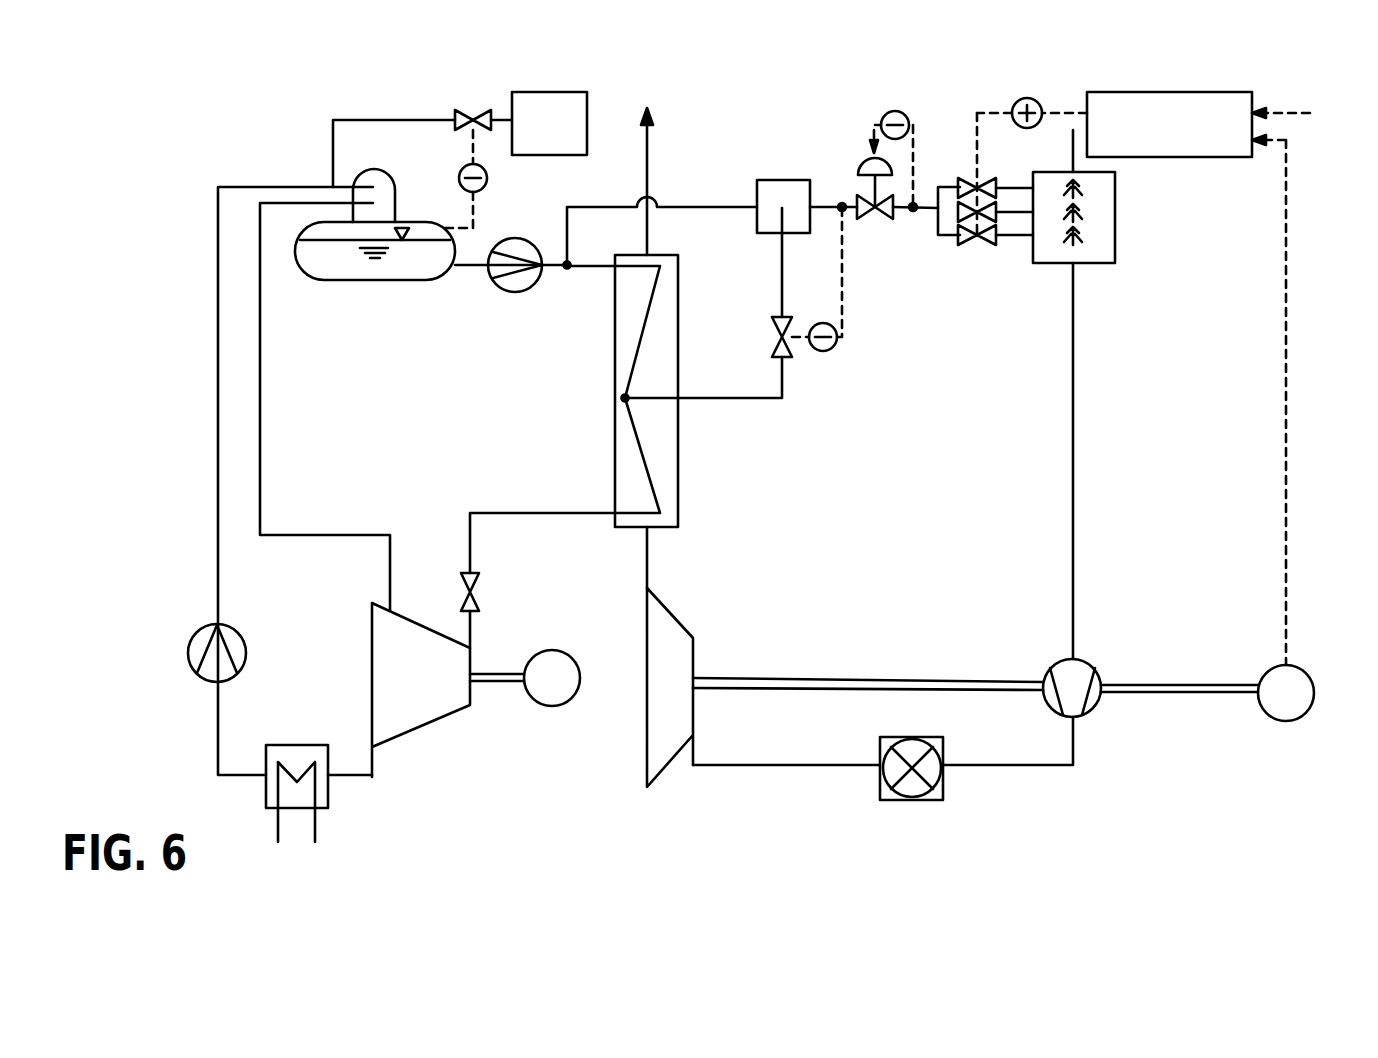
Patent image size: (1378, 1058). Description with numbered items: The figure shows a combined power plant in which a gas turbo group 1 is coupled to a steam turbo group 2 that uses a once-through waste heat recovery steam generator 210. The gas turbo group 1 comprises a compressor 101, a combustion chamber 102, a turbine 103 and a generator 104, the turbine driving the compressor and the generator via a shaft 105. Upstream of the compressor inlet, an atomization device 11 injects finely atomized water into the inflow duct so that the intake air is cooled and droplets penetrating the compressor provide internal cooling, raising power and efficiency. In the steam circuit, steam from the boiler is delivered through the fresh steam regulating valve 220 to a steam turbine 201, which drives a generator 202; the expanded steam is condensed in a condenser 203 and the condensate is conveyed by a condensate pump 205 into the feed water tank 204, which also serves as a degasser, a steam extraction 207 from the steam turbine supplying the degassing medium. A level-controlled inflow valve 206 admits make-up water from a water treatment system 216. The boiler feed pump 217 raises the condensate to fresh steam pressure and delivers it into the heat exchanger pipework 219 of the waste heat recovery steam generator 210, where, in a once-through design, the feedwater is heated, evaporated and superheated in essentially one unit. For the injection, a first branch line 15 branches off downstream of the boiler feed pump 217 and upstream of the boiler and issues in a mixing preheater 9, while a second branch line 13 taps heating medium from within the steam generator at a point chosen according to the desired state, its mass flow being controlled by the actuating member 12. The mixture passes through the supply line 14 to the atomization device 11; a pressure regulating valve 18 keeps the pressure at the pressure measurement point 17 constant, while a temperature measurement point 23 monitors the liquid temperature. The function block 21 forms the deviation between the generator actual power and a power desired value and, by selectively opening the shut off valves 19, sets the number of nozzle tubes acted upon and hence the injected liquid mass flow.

The gas turbo group 1 is at (907, 640).
The steam turbo group 2 is at (372, 403).
The mixing preheater 9 is at (768, 181).
The atomization device 11 is at (1115, 253).
The actuating member 12 is at (772, 347).
The second branch line 13 is at (782, 394).
The supply line 14 is at (820, 207).
The first branch line 15 is at (603, 206).
The pressure measurement point 17 is at (913, 214).
The pressure regulating valve 18 is at (862, 216).
The shut off valves 19 is at (992, 243).
The function block 21 is at (1163, 158).
The temperature measurement point 23 is at (843, 204).
The compressor 101 is at (1087, 714).
The combustion chamber 102 is at (939, 777).
The turbine 103 is at (668, 757).
The generator 104 is at (1283, 722).
The shaft 105 is at (962, 677).
The steam turbine 201 is at (467, 699).
The generator 202 is at (561, 704).
The condenser 203 is at (328, 793).
The feed water tank 204 is at (348, 276).
The condensate pump 205 is at (188, 647).
The inflow valve 206 is at (468, 111).
The steam extraction 207 is at (260, 467).
The waste heat recovery steam generator 210 is at (678, 436).
The water treatment system 216 is at (578, 141).
The boiler feed pump 217 is at (513, 238).
The heat exchanger pipework 219 is at (652, 486).
The fresh steam regulating valve 220 is at (478, 584).